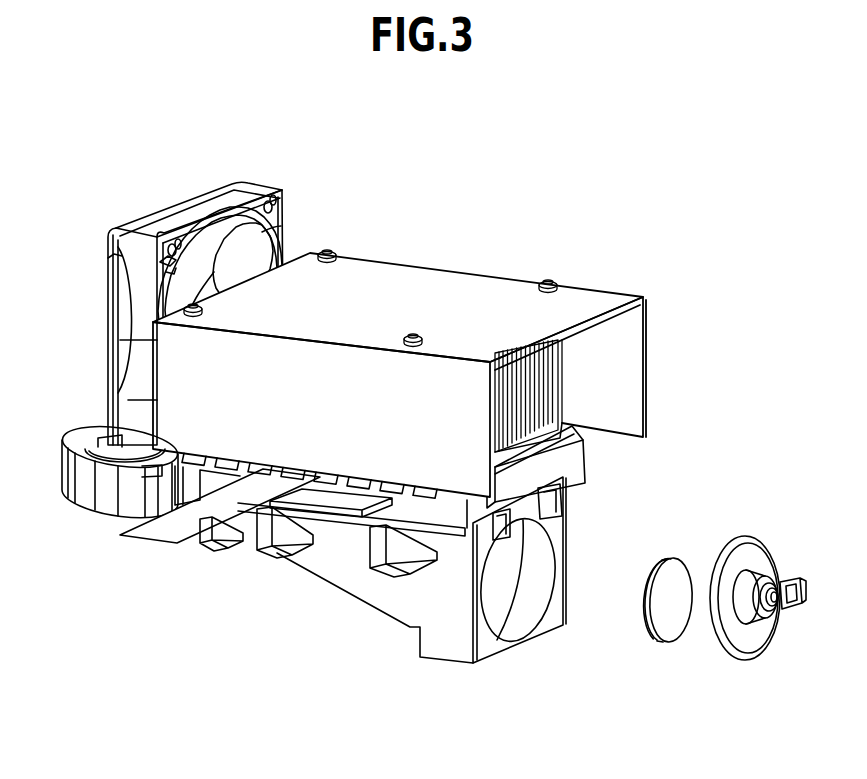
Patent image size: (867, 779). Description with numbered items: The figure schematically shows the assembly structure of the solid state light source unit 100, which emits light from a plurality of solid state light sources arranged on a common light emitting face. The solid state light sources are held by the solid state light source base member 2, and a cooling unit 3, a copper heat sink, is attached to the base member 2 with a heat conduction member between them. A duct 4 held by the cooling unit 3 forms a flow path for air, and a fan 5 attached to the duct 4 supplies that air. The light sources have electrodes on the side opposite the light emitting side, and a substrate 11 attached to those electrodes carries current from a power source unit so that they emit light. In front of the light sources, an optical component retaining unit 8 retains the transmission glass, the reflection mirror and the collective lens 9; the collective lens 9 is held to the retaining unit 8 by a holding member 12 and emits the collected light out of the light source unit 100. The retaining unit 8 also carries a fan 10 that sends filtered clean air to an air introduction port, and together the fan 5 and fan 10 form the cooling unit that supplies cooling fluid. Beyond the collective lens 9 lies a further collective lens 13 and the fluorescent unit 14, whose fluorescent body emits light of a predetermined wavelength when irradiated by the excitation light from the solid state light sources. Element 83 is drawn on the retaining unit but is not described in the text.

The solid state light source unit 100 is at (92, 140).
The solid state light source base member 2 is at (580, 460).
The cooling unit 3 is at (530, 395).
The duct 4 is at (415, 285).
The fan 5 is at (128, 317).
The optical component retaining unit 8 is at (345, 577).
The collective lens 9 is at (512, 578).
The fan 10 is at (83, 440).
The substrate 11 is at (163, 533).
The holding member 12 is at (520, 630).
The collective lens 13 is at (666, 632).
The fluorescent unit 14 is at (742, 640).
The engaging tab 83 is at (563, 508).